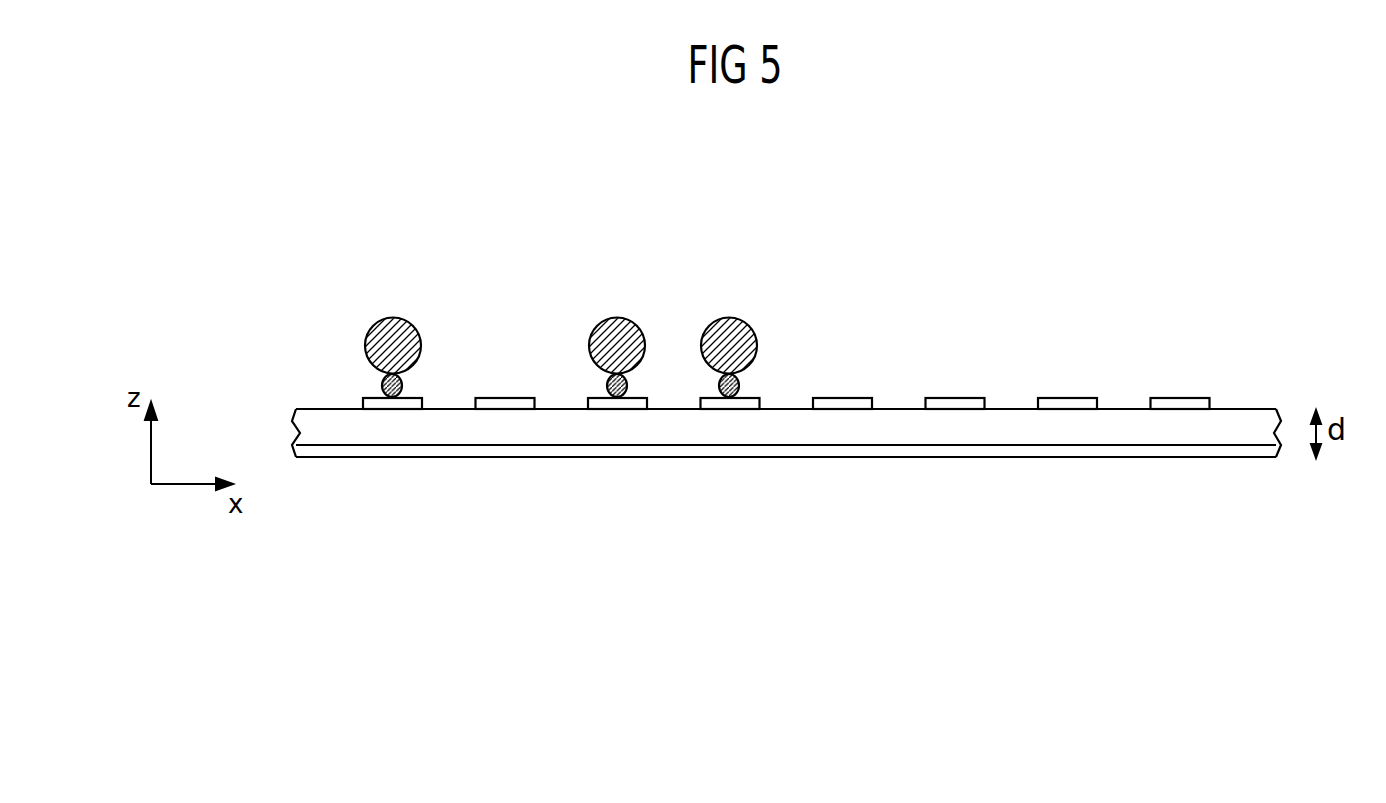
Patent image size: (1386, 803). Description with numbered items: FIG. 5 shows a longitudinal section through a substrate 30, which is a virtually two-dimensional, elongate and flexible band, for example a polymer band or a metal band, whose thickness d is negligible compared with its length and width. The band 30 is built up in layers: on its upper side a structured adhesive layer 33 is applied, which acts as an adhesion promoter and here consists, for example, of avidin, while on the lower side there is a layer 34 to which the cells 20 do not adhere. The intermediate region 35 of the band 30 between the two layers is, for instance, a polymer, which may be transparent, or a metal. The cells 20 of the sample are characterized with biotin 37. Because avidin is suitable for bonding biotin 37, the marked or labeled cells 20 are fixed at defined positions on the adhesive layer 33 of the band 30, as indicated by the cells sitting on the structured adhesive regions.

The substrate 30 is at (786, 372).
The cells 20 is at (400, 326).
The biotin 37 is at (402, 383).
The adhesive layer 33 is at (402, 403).
The intermediate region 35 is at (972, 433).
The layer 34 is at (1120, 450).